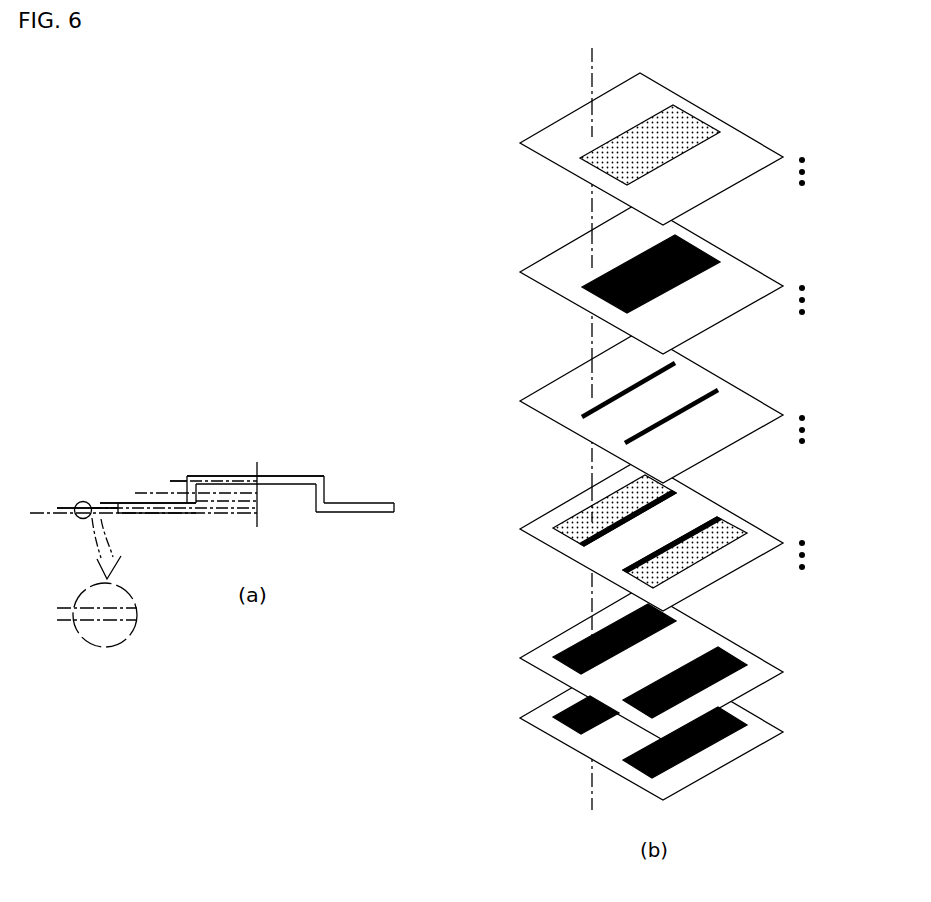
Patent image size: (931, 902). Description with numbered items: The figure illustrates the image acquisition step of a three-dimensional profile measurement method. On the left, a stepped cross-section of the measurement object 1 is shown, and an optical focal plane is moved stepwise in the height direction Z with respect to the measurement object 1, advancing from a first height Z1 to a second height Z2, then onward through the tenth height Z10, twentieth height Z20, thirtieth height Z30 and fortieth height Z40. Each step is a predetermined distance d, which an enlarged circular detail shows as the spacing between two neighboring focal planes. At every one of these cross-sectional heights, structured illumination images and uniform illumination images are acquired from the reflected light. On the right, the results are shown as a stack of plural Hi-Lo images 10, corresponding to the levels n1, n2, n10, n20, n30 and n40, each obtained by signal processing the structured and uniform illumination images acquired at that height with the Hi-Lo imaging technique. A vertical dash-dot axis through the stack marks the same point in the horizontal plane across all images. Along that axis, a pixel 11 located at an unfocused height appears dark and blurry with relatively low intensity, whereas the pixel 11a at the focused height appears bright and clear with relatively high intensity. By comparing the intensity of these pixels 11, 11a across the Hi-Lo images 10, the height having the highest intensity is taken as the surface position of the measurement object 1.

The measurement object 1 is at (295, 446).
The first focal plane height Z1 is at (42, 499).
The second focal plane height Z2 is at (67, 491).
The tenth focal plane height Z10 is at (113, 485).
The twentieth focal plane height Z20 is at (149, 479).
The thirtieth focal plane height Z30 is at (179, 468).
The fortieth focal plane height Z40 is at (216, 463).
The predetermined distance d is at (63, 577).
The Hi-Lo images 10 is at (648, 429).
The pixel 11 is at (591, 128).
The pixel at focused height 11a is at (591, 513).
The first Hi-Lo image n1 is at (753, 714).
The second Hi-Lo image n2 is at (753, 654).
The tenth Hi-Lo image n10 is at (753, 525).
The twentieth Hi-Lo image n20 is at (753, 397).
The thirtieth Hi-Lo image n30 is at (753, 268).
The fortieth Hi-Lo image n40 is at (753, 139).